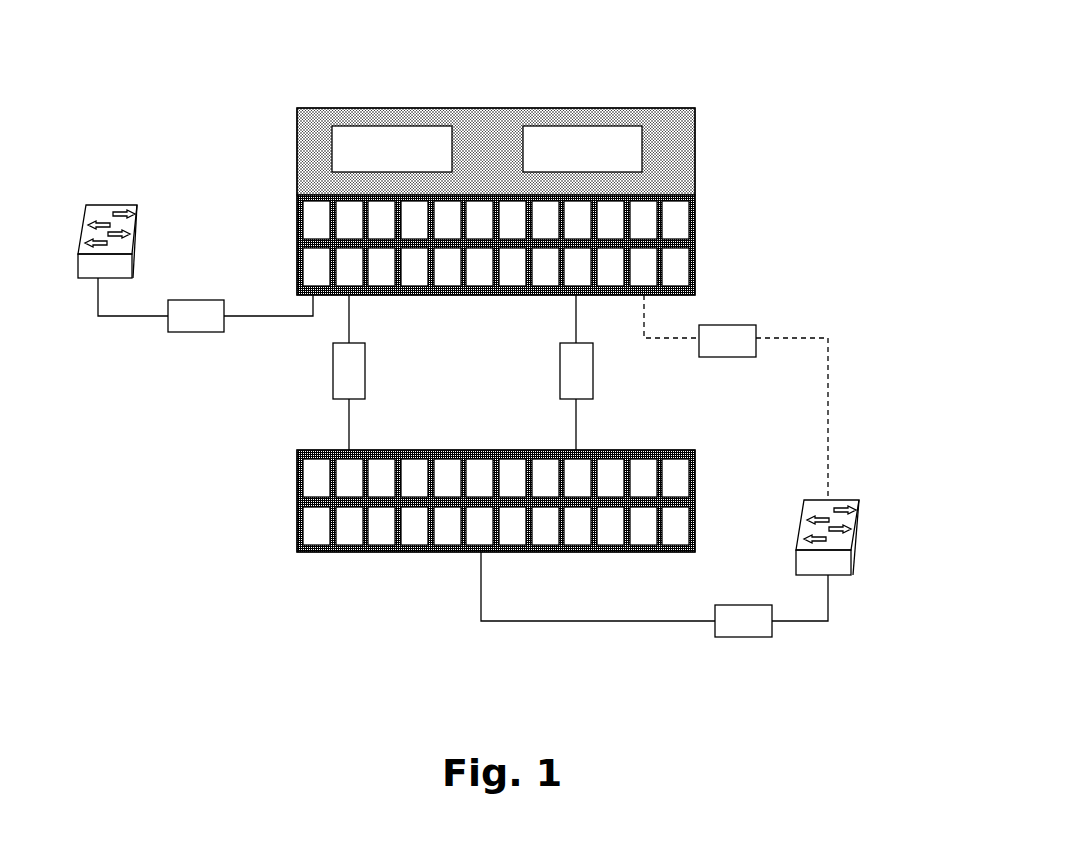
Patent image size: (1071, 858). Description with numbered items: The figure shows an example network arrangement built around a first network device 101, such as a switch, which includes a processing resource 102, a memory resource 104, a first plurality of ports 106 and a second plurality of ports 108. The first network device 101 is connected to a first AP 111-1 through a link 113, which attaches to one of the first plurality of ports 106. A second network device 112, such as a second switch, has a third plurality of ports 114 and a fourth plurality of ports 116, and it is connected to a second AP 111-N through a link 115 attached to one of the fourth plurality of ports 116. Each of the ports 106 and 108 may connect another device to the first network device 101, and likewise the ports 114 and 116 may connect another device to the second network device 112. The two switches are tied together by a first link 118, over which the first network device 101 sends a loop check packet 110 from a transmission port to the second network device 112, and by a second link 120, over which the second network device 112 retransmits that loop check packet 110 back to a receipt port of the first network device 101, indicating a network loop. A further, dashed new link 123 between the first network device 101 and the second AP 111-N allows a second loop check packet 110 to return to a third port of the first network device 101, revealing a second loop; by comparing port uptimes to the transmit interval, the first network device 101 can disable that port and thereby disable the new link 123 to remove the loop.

The first network device 101 is at (501, 170).
The processing resource 102 is at (393, 134).
The memory resource 104 is at (583, 134).
The first plurality of ports 106 is at (288, 268).
The second plurality of ports 108 is at (288, 222).
The loop check packet 110 is at (175, 336).
The first AP 111-1 is at (108, 200).
The second AP 111-N is at (850, 500).
The second network device 112 is at (480, 499).
The link 113 is at (200, 336).
The third plurality of ports 114 is at (288, 480).
The link 115 is at (749, 641).
The fourth plurality of ports 116 is at (288, 526).
The first link 118 is at (330, 374).
The second link 120 is at (557, 372).
The new link 123 is at (840, 374).